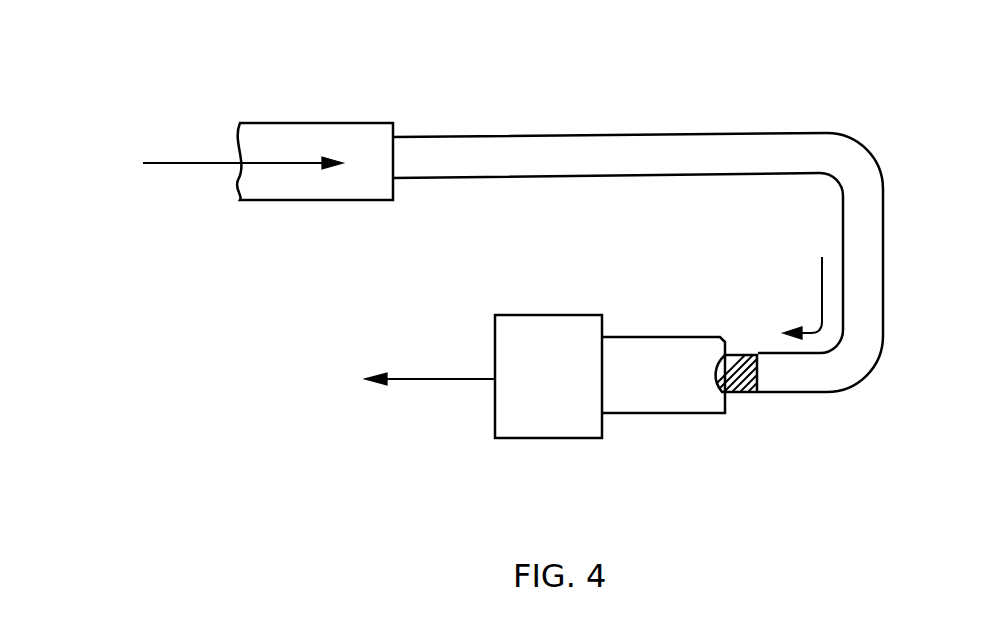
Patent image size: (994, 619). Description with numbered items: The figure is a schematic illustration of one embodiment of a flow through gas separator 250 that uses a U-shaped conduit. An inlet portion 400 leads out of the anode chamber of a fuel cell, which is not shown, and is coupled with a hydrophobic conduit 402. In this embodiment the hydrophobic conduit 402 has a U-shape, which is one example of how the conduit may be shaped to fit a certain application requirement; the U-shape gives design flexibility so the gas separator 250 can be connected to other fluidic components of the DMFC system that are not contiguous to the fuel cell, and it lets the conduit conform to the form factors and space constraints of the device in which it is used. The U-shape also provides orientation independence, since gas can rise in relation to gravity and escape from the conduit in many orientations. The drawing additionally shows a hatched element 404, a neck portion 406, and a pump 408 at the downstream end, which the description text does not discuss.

The flow through gas separator 250 is at (723, 50).
The inlet portion 400 is at (270, 200).
The hydrophobic conduit 402 is at (667, 186).
The seal plug 404 is at (742, 392).
The pump inlet neck 406 is at (635, 413).
The pump 408 is at (575, 406).